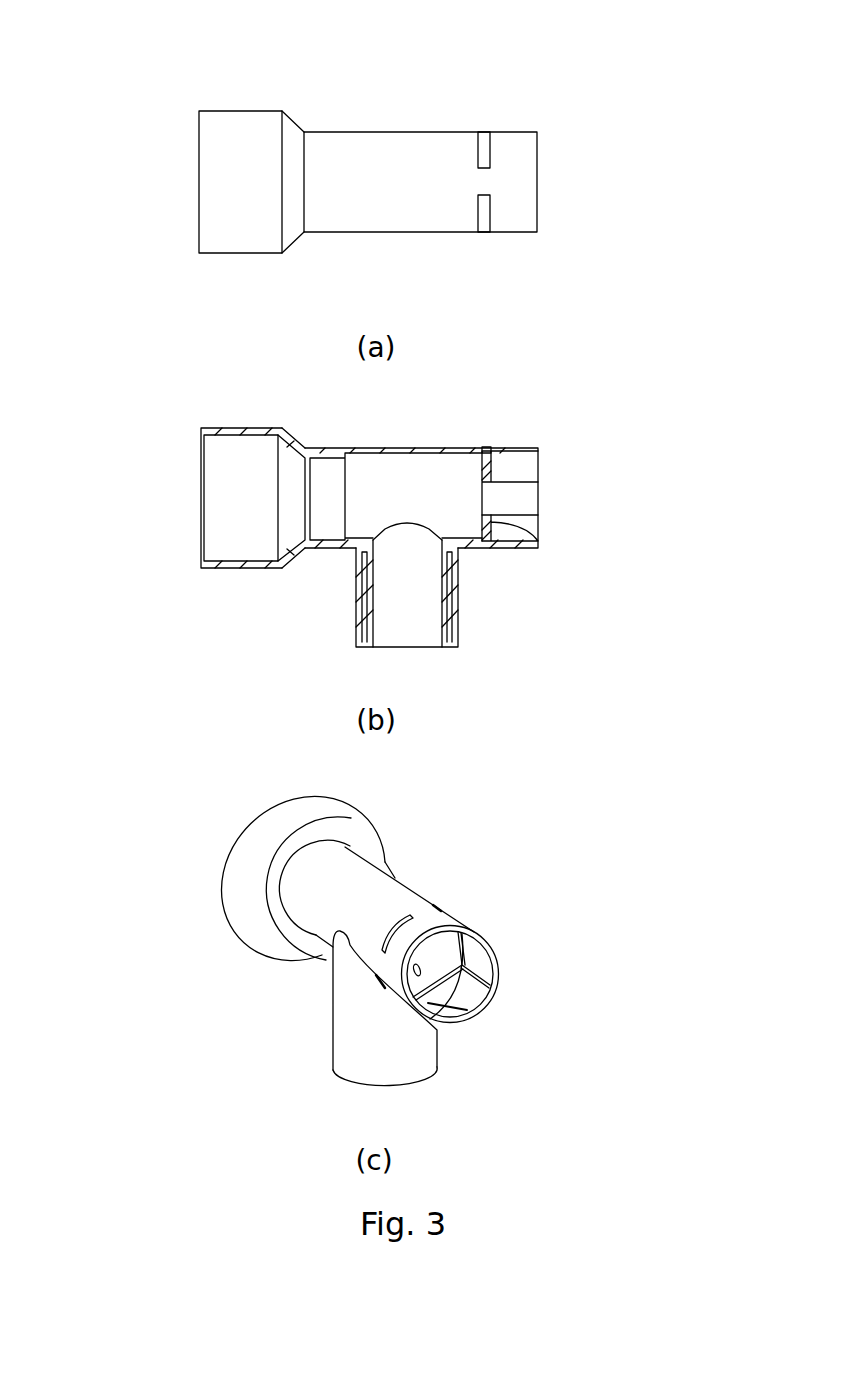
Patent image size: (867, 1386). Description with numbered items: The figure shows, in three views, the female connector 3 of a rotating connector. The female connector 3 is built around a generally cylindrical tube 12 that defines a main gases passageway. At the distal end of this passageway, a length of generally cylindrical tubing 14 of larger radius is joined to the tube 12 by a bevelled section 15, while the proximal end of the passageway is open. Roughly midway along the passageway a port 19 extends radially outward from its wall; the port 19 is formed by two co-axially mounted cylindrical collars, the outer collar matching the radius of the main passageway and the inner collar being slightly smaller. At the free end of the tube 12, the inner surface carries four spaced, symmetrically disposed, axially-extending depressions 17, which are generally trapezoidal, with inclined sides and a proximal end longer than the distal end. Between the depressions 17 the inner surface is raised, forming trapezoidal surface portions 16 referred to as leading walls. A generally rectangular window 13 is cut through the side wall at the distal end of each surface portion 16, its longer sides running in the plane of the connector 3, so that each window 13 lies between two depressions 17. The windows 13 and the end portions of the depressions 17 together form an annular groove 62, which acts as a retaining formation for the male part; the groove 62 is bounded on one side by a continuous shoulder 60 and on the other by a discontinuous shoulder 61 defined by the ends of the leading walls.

The female connector 3 is at (633, 90).
The cylindrical tube 12 is at (519, 170).
The rectangular window 13 is at (487, 238).
The cylindrical tubing 14 is at (235, 195).
The bevelled section 15 is at (297, 242).
The surface portion (leading wall) 16 is at (528, 463).
The depressions 17 is at (528, 498).
The port 19 is at (468, 623).
The continuous shoulder 60 is at (462, 967).
The discontinuous shoulder 61 is at (468, 1010).
The annular groove 62 is at (540, 550).